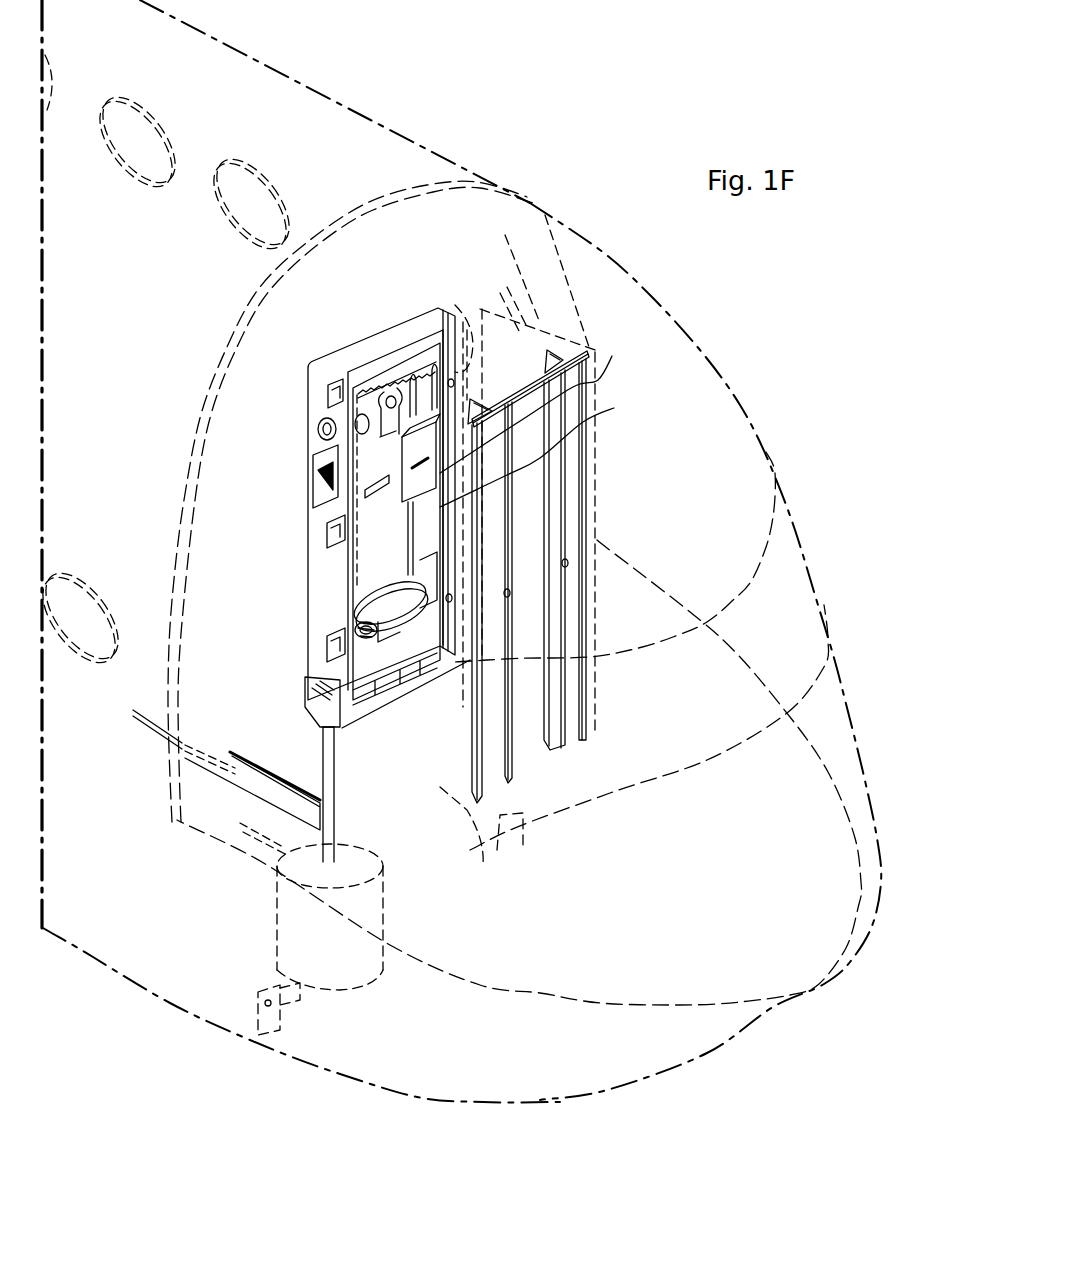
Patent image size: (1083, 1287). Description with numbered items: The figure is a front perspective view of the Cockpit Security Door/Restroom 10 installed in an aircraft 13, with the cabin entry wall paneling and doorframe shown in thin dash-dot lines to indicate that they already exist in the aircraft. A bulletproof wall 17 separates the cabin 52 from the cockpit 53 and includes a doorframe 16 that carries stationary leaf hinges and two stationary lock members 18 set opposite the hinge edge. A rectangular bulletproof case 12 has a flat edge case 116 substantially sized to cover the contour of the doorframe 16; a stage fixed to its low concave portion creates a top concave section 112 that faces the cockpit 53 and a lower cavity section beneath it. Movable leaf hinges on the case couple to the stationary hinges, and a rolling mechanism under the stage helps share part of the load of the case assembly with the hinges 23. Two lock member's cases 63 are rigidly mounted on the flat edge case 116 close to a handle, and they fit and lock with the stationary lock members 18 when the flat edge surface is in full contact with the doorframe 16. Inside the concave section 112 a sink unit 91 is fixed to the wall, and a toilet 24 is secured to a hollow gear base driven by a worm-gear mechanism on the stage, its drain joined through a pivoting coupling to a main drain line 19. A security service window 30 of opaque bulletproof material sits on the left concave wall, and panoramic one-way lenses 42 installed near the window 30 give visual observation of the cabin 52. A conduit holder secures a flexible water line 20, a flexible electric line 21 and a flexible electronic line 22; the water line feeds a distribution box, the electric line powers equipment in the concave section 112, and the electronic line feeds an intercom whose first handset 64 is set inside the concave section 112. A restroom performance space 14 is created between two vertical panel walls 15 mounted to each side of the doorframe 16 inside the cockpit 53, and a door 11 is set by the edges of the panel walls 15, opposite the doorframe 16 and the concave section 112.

The Cockpit Security Door/Restroom 10 is at (627, 490).
The door 11 is at (573, 493).
The rectangular bulletproof case 12 is at (357, 347).
The aircraft 13 is at (430, 150).
The restroom performance space 14 is at (393, 723).
The vertical panel walls 15 is at (540, 327).
The doorframe 16 is at (472, 345).
The bulletproof wall 17 is at (180, 517).
The stationary lock members 18 is at (456, 383).
The main drain line 19 is at (340, 840).
The flexible water line 20 is at (130, 724).
The flexible electric line 21 is at (237, 753).
The flexible electronic line 22 is at (265, 748).
The hinges 23 is at (340, 533).
The toilet 24 is at (395, 637).
The security service window 30 is at (318, 485).
The panoramic one-way lenses 42 is at (322, 428).
The cabin 52 is at (128, 548).
The cockpit 53 is at (680, 738).
The lock member's case 63 is at (433, 380).
The first handset 64 is at (403, 433).
The sink unit 91 is at (539, 447).
The top concave section 112 is at (385, 533).
The flat edge case 116 is at (537, 399).